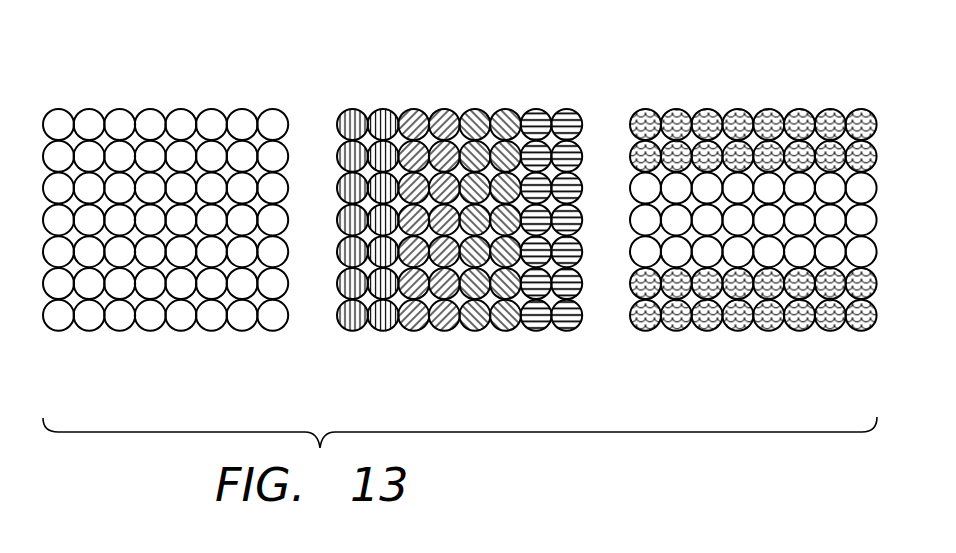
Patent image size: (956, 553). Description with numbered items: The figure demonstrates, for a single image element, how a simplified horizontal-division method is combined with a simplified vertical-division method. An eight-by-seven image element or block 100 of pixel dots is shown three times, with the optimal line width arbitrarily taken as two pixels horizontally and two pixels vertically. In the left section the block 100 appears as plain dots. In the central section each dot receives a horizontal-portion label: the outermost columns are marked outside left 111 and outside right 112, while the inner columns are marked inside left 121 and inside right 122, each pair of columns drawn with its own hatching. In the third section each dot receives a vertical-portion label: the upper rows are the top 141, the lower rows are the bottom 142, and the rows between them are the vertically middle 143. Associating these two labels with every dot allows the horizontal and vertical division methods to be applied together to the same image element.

The image element 100 is at (165, 75).
The outside left portion 111 is at (383, 103).
The inside left portion 121 is at (443, 338).
The inside right portion 122 is at (505, 103).
The outside right portion 112 is at (567, 338).
The top portion 141 is at (732, 100).
The vertically middle portion 143 is at (625, 233).
The bottom portion 142 is at (730, 337).